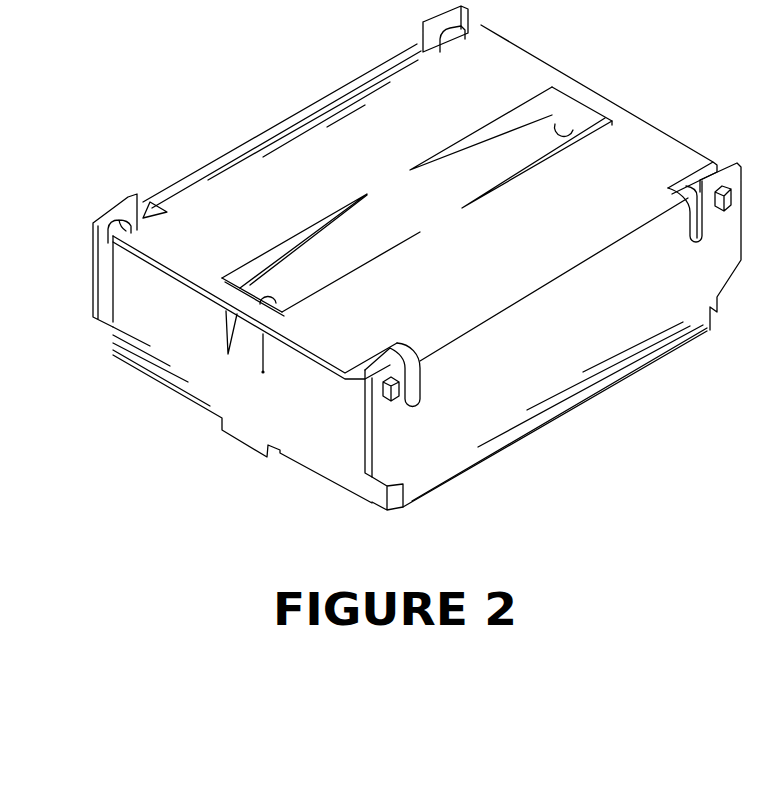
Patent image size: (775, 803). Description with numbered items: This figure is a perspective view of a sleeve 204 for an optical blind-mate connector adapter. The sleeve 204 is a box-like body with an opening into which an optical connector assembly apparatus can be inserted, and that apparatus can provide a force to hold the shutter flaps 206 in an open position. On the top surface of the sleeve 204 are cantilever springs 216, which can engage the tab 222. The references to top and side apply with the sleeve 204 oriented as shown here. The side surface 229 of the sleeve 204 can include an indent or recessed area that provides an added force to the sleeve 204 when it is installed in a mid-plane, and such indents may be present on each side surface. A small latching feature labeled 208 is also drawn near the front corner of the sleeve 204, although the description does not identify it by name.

The sleeve 204 is at (278, 121).
The shutter flaps 206 is at (168, 387).
The latch hook 208 is at (392, 402).
The cantilever springs 216 is at (326, 263).
The tab 222 is at (246, 338).
The side surface 229 is at (538, 372).